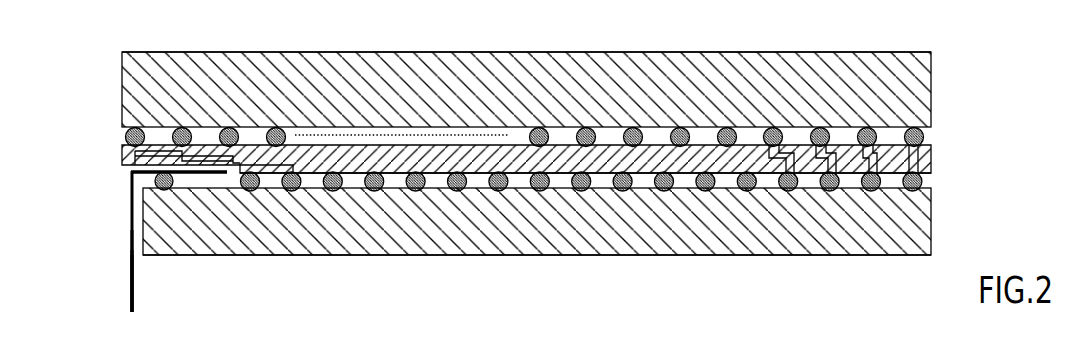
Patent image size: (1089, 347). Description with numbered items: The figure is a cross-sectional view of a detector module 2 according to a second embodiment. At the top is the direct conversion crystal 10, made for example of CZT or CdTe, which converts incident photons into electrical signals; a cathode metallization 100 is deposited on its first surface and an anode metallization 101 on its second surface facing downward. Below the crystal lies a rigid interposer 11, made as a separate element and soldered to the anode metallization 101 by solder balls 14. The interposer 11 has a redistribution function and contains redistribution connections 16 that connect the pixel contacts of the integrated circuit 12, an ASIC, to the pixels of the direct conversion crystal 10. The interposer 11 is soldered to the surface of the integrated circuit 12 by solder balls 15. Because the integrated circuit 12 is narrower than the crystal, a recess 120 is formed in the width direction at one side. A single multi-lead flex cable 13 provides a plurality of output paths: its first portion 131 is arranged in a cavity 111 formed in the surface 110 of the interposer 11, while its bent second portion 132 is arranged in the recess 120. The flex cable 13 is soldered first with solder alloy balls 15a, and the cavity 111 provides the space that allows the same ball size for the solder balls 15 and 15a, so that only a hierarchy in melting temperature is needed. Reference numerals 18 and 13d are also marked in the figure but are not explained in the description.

The detector module 2 is at (115, 48).
The direct conversion crystal 10 is at (931, 80).
The cathode metallization 100 is at (686, 52).
The anode metallization 101 is at (612, 128).
The solder balls 14 is at (923, 137).
The interposer 11 is at (931, 156).
The first portion 131 is at (142, 166).
The redistribution connections 16 is at (784, 165).
The solder balls 15 is at (921, 181).
The solder alloy 15a is at (156, 185).
The integrated circuit 12 is at (931, 219).
The bottom surface of second substrate 18 is at (258, 246).
The surface of the interposer 110 is at (440, 174).
The multi-lead flex cable 13 is at (122, 243).
The shield element portion 13d is at (122, 230).
The second portion 132 is at (130, 262).
The cavity 111 is at (122, 179).
The recess 120 is at (138, 255).